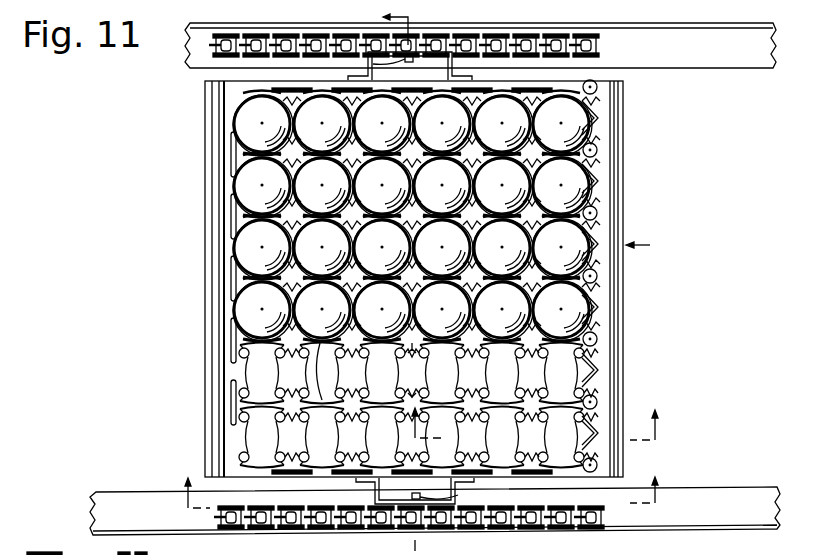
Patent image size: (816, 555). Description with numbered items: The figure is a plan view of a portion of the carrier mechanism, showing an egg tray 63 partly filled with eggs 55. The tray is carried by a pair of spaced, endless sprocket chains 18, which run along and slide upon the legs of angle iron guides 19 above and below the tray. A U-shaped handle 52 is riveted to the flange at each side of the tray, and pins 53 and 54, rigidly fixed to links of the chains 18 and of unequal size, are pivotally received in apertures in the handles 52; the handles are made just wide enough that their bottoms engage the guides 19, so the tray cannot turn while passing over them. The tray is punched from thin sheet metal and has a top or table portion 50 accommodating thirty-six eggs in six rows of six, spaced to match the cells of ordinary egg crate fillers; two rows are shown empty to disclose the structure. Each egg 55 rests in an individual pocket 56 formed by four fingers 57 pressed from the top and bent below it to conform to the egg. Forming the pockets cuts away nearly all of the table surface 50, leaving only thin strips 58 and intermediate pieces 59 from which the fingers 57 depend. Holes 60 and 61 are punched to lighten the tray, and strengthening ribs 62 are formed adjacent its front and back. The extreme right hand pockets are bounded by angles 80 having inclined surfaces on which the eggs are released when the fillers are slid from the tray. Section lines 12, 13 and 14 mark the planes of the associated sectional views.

The section line 12- 12 is at (422, 501).
The section line 13- 13 is at (538, 429).
The section line 14- 14 is at (410, 28).
The sprocket chains 18 is at (605, 52).
The angle iron guides 19 is at (722, 60).
The top or table portion 50 is at (230, 97).
The U-shaped handle 52 is at (454, 61).
The pin 53 is at (373, 61).
The pin 54 is at (458, 495).
The eggs 55 is at (257, 174).
The pockets 56 is at (245, 412).
The fingers 57 is at (478, 355).
The strips 58 is at (334, 371).
The intermediate pieces 59 is at (416, 395).
The holes 60 is at (603, 302).
The holes 61 is at (235, 334).
The strengthening ribs 62 is at (226, 372).
The tray 63 is at (650, 246).
The angles 80 is at (603, 184).